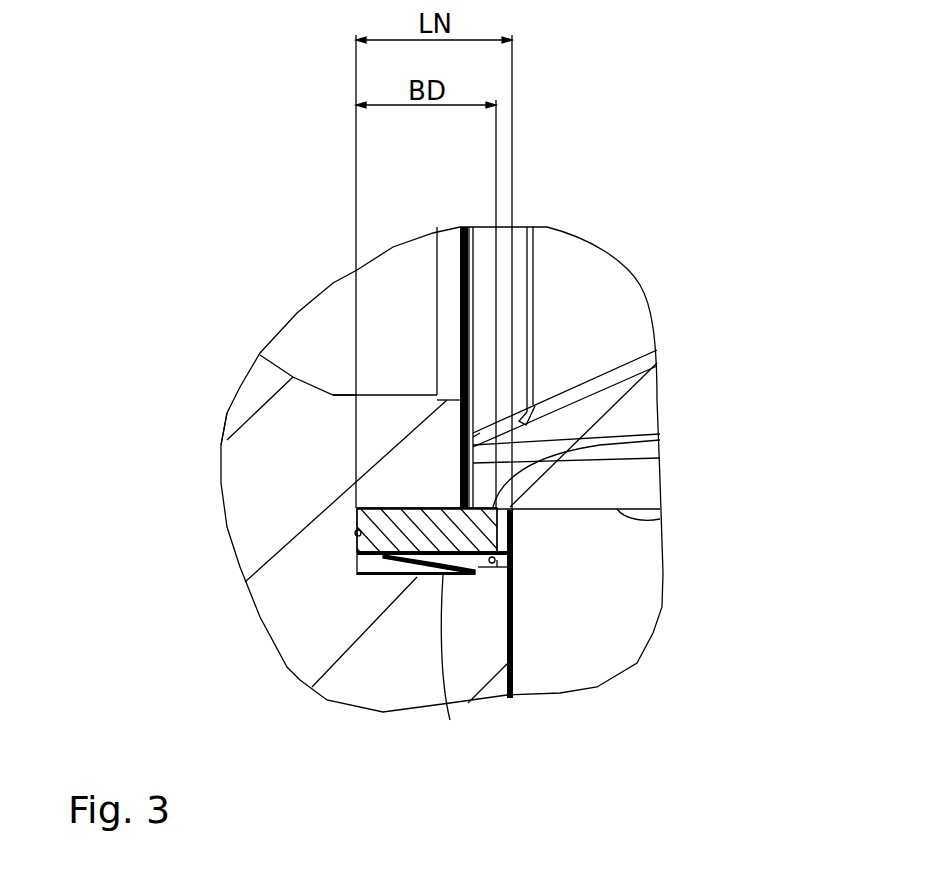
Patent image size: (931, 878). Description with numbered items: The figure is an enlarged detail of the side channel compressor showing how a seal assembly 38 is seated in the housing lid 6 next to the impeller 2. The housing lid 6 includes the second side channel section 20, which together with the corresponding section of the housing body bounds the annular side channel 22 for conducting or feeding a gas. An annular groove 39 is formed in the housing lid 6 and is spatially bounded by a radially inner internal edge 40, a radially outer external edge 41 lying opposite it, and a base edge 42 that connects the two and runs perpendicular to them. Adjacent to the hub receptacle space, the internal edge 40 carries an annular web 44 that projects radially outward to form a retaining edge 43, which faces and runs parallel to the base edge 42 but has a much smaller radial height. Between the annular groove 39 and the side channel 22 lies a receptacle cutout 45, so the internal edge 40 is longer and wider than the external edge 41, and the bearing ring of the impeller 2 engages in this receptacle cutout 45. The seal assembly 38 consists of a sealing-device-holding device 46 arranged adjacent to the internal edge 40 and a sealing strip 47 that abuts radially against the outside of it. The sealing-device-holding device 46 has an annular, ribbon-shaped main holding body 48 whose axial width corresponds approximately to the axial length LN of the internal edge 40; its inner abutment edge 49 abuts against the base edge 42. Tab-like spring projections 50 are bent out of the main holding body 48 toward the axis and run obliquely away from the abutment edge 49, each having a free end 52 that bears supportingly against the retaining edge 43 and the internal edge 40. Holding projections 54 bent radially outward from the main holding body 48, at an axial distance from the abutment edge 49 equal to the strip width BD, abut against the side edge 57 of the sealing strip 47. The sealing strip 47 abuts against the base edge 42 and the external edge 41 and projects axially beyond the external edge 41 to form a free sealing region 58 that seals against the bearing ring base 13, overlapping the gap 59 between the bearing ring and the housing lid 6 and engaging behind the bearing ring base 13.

The impeller 2 is at (660, 390).
The housing lid 6 is at (230, 418).
The bearing ring base 13 is at (660, 510).
The second side channel section 20 is at (253, 392).
The side channel 22 is at (323, 320).
The seal assembly 38 is at (380, 500).
The annular groove 39 is at (520, 522).
The internal edge 40 is at (417, 577).
The external edge 41 is at (515, 575).
The base edge 42 is at (350, 522).
The retaining edge 43 is at (450, 720).
The annular web 44 is at (497, 567).
The receptacle cutout 45 is at (475, 462).
The sealing-device-holding device 46 is at (388, 570).
The sealing strip 47 is at (380, 509).
The main holding body 48 is at (380, 568).
The abutment edge 49 is at (355, 535).
The spring projection 50 is at (420, 575).
The free end 52 is at (511, 697).
The holding projection 54 is at (497, 573).
The side edge 57 is at (514, 553).
The free sealing region 58 is at (497, 495).
The gap 59 is at (480, 436).